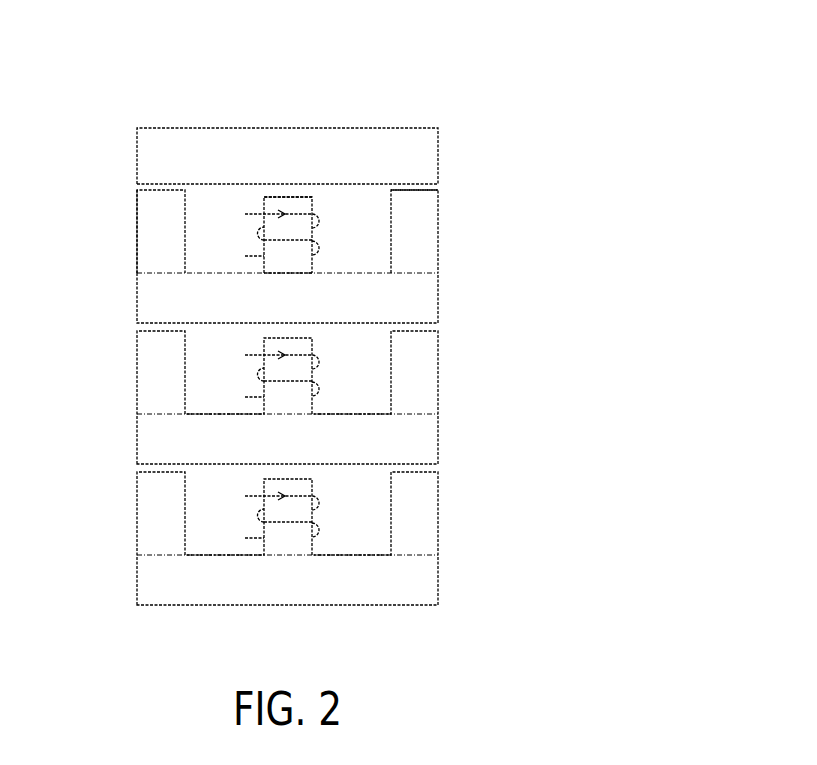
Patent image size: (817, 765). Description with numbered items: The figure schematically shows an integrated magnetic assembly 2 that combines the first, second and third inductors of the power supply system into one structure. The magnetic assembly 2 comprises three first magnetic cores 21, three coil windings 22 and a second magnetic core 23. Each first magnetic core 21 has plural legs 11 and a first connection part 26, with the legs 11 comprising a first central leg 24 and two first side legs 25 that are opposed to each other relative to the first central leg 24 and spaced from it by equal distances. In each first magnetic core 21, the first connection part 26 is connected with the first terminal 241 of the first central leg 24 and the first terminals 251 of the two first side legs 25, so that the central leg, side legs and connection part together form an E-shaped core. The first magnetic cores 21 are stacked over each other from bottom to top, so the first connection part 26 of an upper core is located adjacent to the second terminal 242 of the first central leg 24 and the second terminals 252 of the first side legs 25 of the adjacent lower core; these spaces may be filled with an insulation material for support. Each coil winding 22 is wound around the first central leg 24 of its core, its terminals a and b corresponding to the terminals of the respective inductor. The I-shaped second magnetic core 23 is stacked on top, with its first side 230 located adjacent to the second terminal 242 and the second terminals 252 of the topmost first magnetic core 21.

The integrated magnetic assembly 2 is at (752, 113).
The legs 11 is at (362, 65).
The first magnetic core 21 is at (467, 320).
The coil winding 22 is at (326, 220).
The second magnetic core 23 is at (417, 120).
The first side 230 is at (416, 180).
The first central leg 24 is at (298, 228).
The first terminal of the first central leg 241 is at (282, 263).
The second terminal of the first central leg 242 is at (312, 197).
The first side legs 25 is at (177, 191).
The first terminals of the first side legs 251 is at (158, 272).
The second terminals of the first side legs 252 is at (138, 185).
The first connection part 26 is at (387, 305).